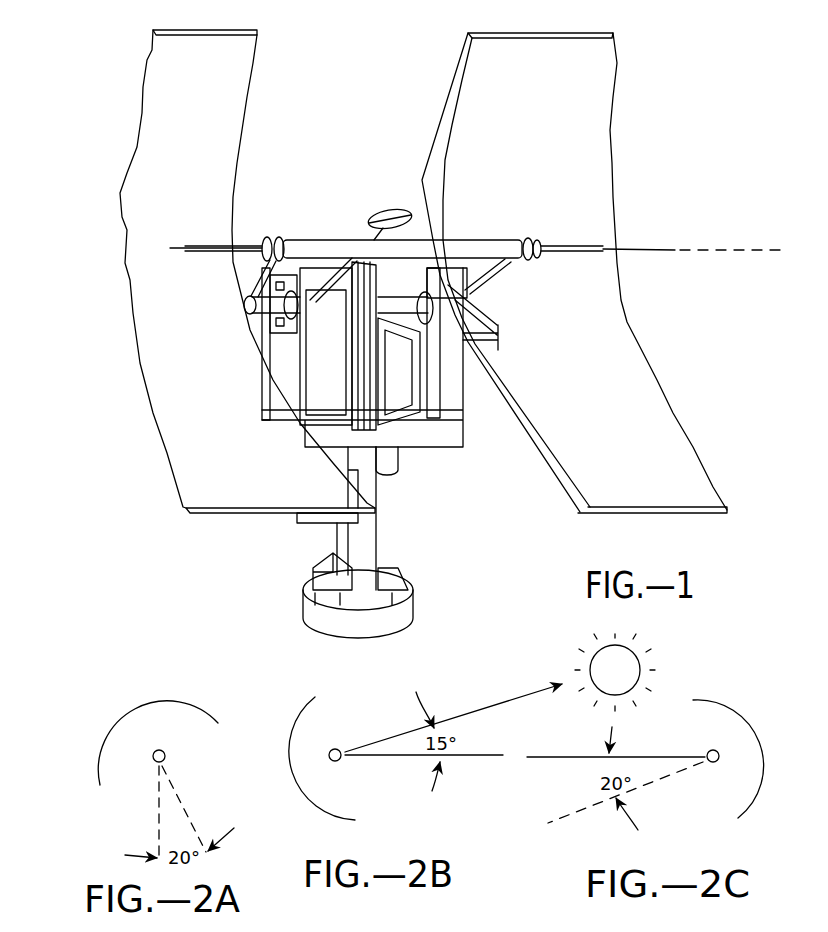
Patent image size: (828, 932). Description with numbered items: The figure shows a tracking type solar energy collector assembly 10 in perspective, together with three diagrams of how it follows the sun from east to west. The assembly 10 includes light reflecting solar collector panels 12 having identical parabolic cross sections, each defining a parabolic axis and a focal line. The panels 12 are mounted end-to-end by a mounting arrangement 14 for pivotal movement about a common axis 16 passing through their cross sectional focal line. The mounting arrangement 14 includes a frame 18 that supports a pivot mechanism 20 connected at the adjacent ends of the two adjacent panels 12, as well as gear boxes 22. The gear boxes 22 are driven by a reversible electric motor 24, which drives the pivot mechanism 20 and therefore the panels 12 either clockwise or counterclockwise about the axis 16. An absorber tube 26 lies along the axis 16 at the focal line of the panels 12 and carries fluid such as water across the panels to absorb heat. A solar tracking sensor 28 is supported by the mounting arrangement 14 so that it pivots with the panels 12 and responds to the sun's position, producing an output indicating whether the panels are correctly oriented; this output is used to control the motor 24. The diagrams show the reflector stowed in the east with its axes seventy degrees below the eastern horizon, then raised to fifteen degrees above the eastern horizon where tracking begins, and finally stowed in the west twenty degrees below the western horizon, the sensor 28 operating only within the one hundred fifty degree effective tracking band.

The solar energy collector assembly 10 is at (690, 393).
The light reflecting solar collector panels 12 is at (250, 66).
The mounting arrangement 14 is at (198, 546).
The common axis 16 is at (728, 250).
The frame 18 is at (377, 534).
The pivot mechanism 20 is at (240, 332).
The gear boxes 22 is at (335, 372).
The reversible electric motor 24 is at (384, 456).
The absorber tube 26 is at (422, 252).
The solar tracking sensor 28 is at (396, 206).